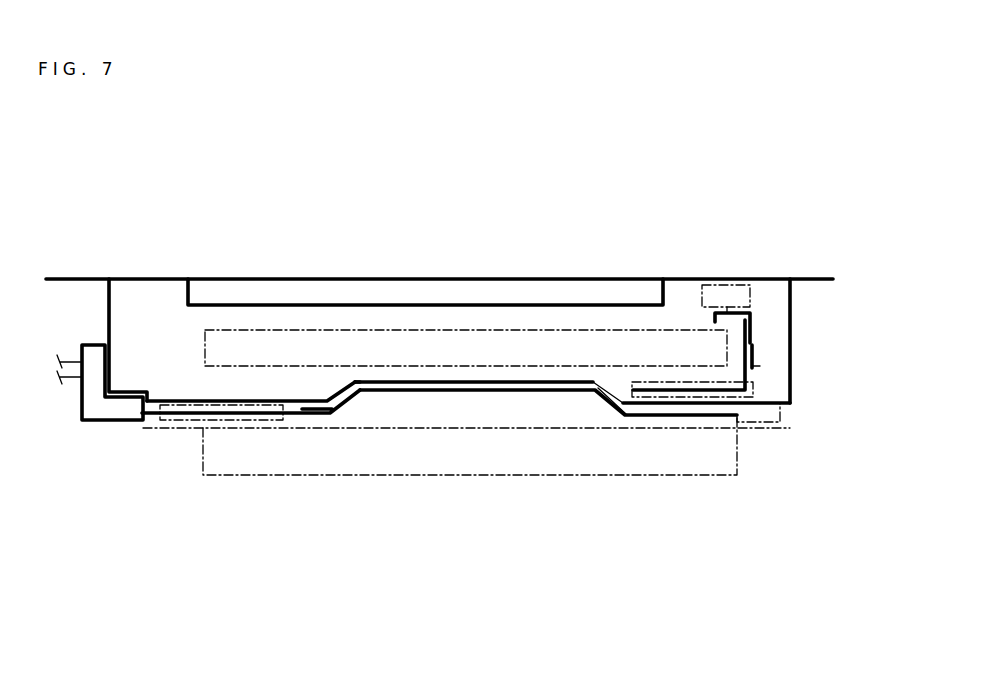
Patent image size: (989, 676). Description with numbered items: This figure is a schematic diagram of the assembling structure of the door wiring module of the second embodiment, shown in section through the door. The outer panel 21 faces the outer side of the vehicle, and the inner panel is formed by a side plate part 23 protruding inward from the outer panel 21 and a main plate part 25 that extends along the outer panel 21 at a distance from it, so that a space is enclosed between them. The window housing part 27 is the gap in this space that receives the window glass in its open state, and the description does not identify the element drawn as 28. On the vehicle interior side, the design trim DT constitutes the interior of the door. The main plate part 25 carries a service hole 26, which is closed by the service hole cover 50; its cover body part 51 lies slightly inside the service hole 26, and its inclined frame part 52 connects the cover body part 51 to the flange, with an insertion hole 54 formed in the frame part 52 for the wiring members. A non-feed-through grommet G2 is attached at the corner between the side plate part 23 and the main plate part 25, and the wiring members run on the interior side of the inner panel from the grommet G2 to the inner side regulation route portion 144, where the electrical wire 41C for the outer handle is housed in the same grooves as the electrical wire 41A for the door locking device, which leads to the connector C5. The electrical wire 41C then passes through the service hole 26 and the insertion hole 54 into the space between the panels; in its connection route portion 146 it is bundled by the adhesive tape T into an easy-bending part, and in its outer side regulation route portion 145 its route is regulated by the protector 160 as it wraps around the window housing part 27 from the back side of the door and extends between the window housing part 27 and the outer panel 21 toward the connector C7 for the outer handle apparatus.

The outer panel 21 is at (49, 278).
The window housing part 27 is at (284, 328).
The gate electrode region 28 is at (200, 308).
The side plate part 23 is at (107, 308).
The grommet G2 is at (100, 426).
The main plate part 25 is at (175, 401).
The service hole 26 is at (325, 398).
The frame part 52 is at (331, 400).
The cover body part 51 is at (430, 378).
The service hole cover 50 is at (500, 380).
The insertion hole 54 is at (610, 384).
The inner side regulation route portion 144 is at (465, 396).
The connection route portion 146 is at (759, 386).
The protector 160 is at (753, 318).
The electrical wire for the outer handle 41C is at (752, 343).
The adhesive tape T is at (754, 368).
The outer side regulation route portion 145 is at (705, 318).
The connector C7 is at (726, 282).
The connector C5 is at (784, 422).
The design trim DT is at (357, 478).
The electrical wire for a door locking device 41A is at (697, 418).